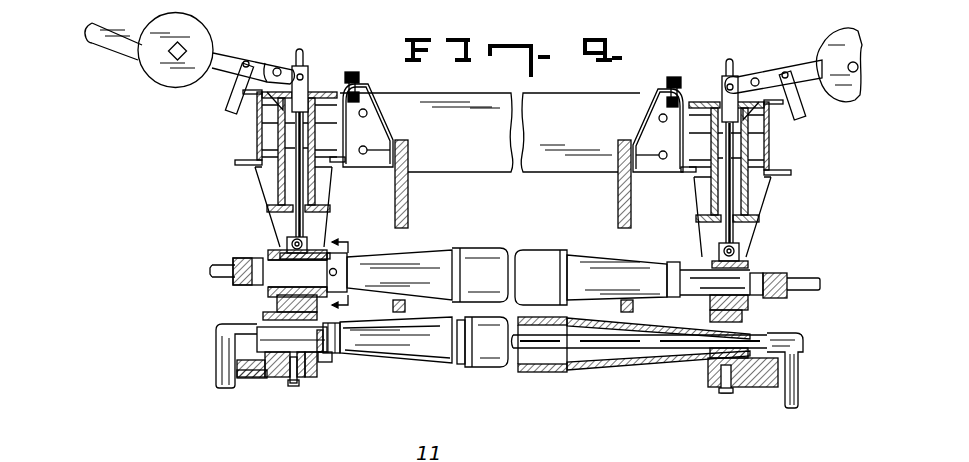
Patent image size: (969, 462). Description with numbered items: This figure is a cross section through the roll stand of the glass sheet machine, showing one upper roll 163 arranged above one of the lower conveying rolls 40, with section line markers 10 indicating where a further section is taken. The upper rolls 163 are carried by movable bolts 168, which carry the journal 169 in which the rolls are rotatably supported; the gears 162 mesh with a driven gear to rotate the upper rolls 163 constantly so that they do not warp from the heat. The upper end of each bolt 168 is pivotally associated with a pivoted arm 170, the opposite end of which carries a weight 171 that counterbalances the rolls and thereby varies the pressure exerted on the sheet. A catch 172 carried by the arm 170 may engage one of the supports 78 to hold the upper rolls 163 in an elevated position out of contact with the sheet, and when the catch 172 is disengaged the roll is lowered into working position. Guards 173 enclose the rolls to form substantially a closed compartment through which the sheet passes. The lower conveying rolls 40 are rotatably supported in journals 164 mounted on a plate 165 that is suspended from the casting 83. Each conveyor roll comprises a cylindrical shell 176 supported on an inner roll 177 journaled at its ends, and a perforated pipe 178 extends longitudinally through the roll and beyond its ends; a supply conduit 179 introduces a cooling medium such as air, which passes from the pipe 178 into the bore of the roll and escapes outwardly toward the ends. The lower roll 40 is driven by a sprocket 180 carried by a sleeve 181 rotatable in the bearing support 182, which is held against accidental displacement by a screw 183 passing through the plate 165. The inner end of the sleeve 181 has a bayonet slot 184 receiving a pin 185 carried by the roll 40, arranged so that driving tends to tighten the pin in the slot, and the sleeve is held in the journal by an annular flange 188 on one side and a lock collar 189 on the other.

The section line 10 is at (482, 272).
The lower conveying rolls 40 is at (427, 348).
The support 78 is at (262, 133).
The casting 83 is at (267, 182).
The gears 162 is at (337, 234).
The upper rolls 163 is at (563, 253).
The journals 164 is at (712, 378).
The plate 165 is at (253, 377).
The movable bolts 168 is at (280, 213).
The journal 169 is at (744, 262).
The pivoted arm 170 is at (253, 62).
The weight 171 is at (168, 73).
The catch 172 is at (227, 110).
The guards 173 is at (620, 195).
The cylindrical shell 176 is at (477, 372).
The roll 177 is at (443, 367).
The perforated pipe 178 is at (628, 358).
The supply conduit 179 is at (225, 360).
The sprocket 180 is at (262, 308).
The sleeve 181 is at (317, 365).
The bearing support 182 is at (288, 380).
The screw 183 is at (296, 386).
The bayonet slot 184 is at (345, 330).
The pin 185 is at (340, 353).
The annular flange 188 is at (277, 377).
The lock collar 189 is at (327, 367).